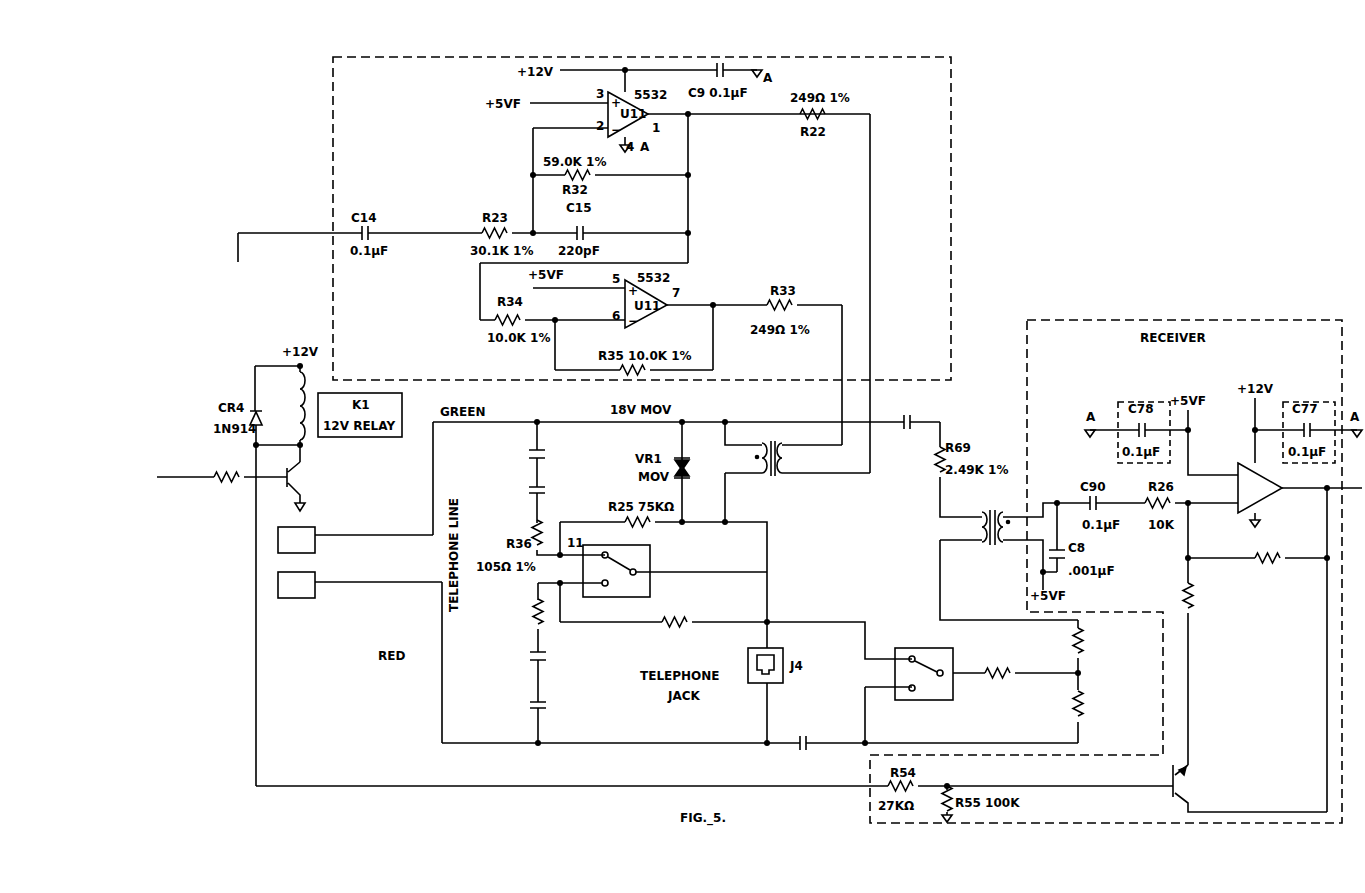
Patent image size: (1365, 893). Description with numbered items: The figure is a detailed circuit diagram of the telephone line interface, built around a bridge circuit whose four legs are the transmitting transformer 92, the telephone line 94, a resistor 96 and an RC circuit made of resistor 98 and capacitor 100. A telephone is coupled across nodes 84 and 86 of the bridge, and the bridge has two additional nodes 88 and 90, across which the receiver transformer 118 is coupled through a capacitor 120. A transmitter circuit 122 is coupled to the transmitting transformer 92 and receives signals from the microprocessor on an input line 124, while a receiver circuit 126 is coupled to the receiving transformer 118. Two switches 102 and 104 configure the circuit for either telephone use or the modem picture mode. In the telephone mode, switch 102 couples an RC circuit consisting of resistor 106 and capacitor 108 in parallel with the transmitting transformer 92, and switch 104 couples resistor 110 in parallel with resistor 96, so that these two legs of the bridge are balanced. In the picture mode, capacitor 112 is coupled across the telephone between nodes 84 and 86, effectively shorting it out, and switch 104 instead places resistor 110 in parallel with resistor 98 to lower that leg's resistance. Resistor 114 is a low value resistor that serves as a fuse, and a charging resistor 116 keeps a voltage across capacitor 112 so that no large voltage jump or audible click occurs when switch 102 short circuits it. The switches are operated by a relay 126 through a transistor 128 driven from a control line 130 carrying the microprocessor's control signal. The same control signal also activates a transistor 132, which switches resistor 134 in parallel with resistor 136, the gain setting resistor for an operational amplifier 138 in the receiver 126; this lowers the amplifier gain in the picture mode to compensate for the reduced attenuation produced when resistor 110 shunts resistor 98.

The transmitter circuit 122 is at (950, 72).
The input line 124 is at (313, 233).
The relay 126 is at (293, 408).
The transistor 128 is at (286, 487).
The control line 130 is at (243, 485).
The node 88 is at (540, 420).
The telephone line 94 is at (430, 525).
The capacitor 108 is at (552, 474).
The resistor 106 is at (537, 530).
The switch 102 is at (652, 582).
The charging resistor 116 is at (692, 606).
The resistor 114 is at (545, 612).
The capacitor 112 is at (548, 690).
The node 84 is at (770, 620).
The node 86 is at (762, 741).
The capacitor 100 is at (808, 735).
The transmitting transformer 92 is at (770, 448).
The capacitor 120 is at (912, 413).
The receiver transformer 118 is at (995, 558).
The switch 104 is at (908, 648).
The resistor 110 is at (996, 680).
The resistor 96 is at (1072, 645).
The node 90 is at (1075, 673).
The resistor 98 is at (1072, 714).
The transistor 132 is at (1170, 793).
The resistor 134 is at (1184, 598).
The gain setting resistor 136 is at (1288, 556).
The operational amplifier 138 is at (1238, 462).